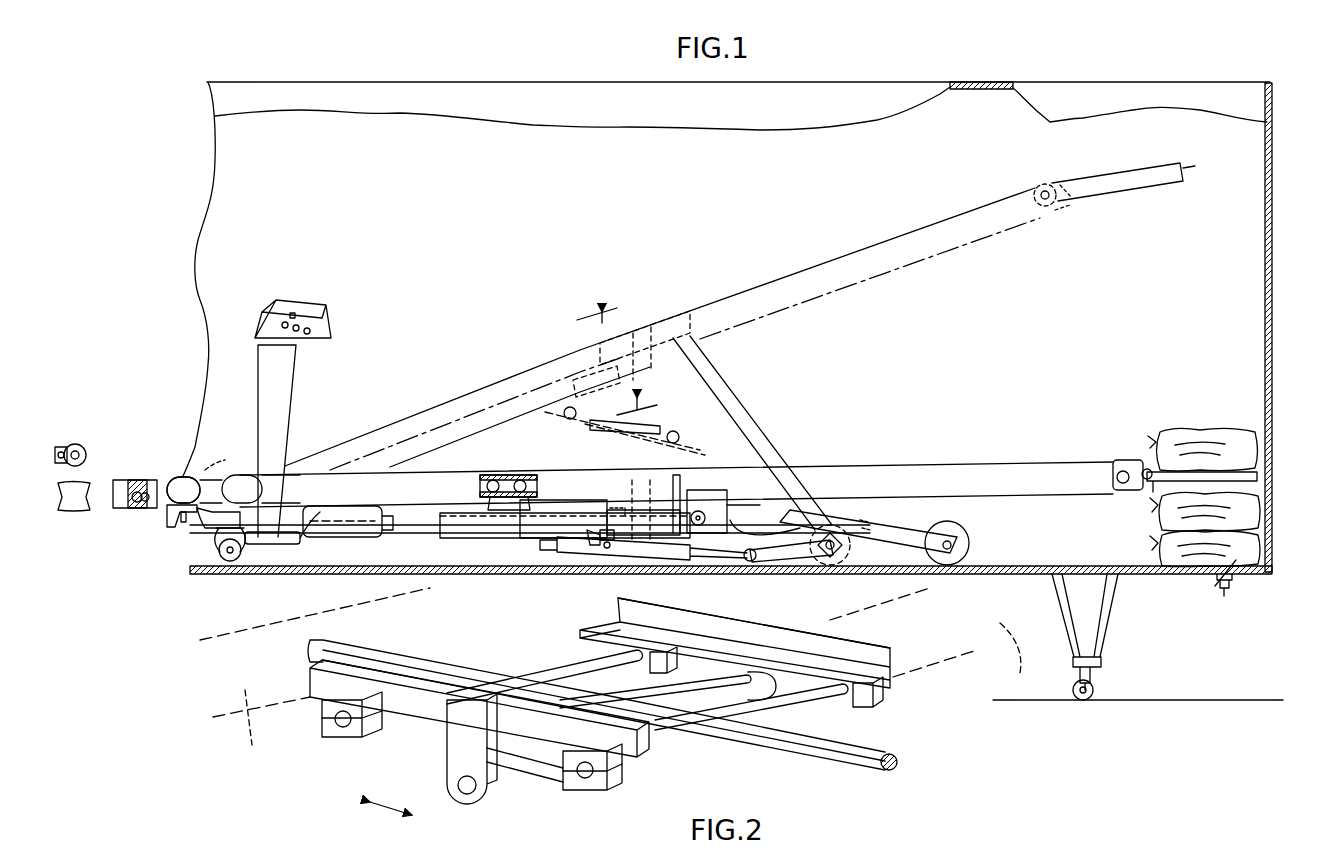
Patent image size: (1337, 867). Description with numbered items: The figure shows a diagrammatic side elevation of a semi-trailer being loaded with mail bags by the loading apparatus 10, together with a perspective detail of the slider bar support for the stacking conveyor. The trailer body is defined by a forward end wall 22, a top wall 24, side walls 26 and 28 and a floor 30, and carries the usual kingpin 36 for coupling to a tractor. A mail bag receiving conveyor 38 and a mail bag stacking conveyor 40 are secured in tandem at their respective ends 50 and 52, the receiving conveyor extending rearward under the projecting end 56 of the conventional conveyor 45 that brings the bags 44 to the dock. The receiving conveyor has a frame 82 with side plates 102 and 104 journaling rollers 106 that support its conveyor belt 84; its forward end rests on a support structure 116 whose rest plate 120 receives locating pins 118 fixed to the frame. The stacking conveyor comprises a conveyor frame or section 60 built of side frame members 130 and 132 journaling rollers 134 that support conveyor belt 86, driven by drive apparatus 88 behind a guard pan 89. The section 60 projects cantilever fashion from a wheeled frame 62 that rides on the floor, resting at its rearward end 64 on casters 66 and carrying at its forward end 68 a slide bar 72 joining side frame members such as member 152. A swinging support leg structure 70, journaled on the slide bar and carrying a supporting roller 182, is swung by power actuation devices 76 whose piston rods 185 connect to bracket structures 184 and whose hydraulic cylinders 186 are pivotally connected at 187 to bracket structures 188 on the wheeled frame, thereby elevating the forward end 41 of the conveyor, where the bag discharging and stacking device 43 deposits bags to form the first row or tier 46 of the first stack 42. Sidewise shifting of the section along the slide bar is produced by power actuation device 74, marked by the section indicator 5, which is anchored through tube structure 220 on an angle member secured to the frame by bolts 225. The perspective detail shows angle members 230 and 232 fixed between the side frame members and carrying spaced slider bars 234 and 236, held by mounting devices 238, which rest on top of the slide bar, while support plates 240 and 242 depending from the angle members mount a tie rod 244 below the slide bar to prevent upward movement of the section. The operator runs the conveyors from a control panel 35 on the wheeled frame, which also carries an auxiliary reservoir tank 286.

In FIG. 1, the section line 5 is at (608, 310).
In FIG. 1, the loading apparatus embodiment 10 is at (1238, 193).
In FIG. 1, the forward end wall 22 is at (1273, 290).
In FIG. 1, the top wall 24 is at (990, 84).
In FIG. 1, the side wall 26 is at (830, 95).
In FIG. 1, the side wall 28 is at (893, 130).
In FIG. 1, the floor 30 is at (975, 574).
In FIG. 1, the control panel 35 is at (336, 318).
In FIG. 1, the kingpin 36 is at (1226, 598).
In FIG. 1, the mail bag receiving conveyor 38 is at (150, 478).
In FIG. 1, the mail bag stacking conveyor 40 is at (975, 438).
In FIG. 1, the forward end of stacking conveyor 41 is at (1038, 210).
In FIG. 1, the first stack 42 is at (1238, 580).
In FIG. 1, the mail bag discharging and stacking device 43 is at (1150, 200).
In FIG. 1, the mail bag 44 is at (1258, 449).
In FIG. 1, the conventional conveyor 45 is at (72, 440).
In FIG. 1, the first row or tier 46 is at (1260, 528).
In FIG. 1, the forward end of receiving conveyor 50 is at (196, 478).
In FIG. 1, the rearward end of stacking conveyor 52 is at (262, 478).
In FIG. 1, the projecting end of conventional conveyor 56 is at (85, 448).
In FIG. 1, the conveyor frame or section 60 is at (420, 471).
In FIG. 1, the wheeled frame 62 is at (485, 540).
In FIG. 1, the rearward end of wheeled frame 64 is at (200, 530).
In FIG. 1, the casters 66 is at (230, 562).
In FIG. 1, the forward end of wheeled frame 68 is at (705, 470).
In FIG. 1, the swinging support leg structure 70 is at (1185, 175).
In FIG. 1, the slide bar 72 is at (705, 500).
In FIG. 2, the slide bar 72 is at (885, 773).
In FIG. 1, the power actuation device 74 is at (640, 493).
In FIG. 1, the power actuation devices 76 is at (600, 565).
In FIG. 1, the conveyor frame 82 is at (118, 480).
In FIG. 1, the conveyor belt 84 is at (140, 480).
In FIG. 1, the conveyor belt 86 is at (502, 475).
In FIG. 1, the drive apparatus 88 is at (262, 548).
In FIG. 1, the guard pan 89 is at (300, 540).
In FIG. 1, the side plate 102 is at (170, 475).
In FIG. 1, the side plate 104 is at (175, 520).
In FIG. 1, the rollers 106 is at (137, 503).
In FIG. 1, the support structure 116 is at (205, 485).
In FIG. 1, the locating pins 118 is at (148, 505).
In FIG. 1, the rest plate 120 is at (183, 477).
In FIG. 1, the side frame member 130 is at (572, 500).
In FIG. 1, the side frame member 132 is at (532, 475).
In FIG. 2, the side frame member 132 is at (270, 712).
In FIG. 1, the rollers 134 is at (530, 535).
In FIG. 1, the side frame member 152 is at (430, 534).
In FIG. 1, the supporting roller 182 is at (970, 547).
In FIG. 1, the bracket structure 184 is at (812, 560).
In FIG. 1, the piston rods 185 is at (733, 558).
In FIG. 1, the hydraulic cylinders 186 is at (675, 561).
In FIG. 1, the pivotal connection 187 is at (600, 545).
In FIG. 1, the bracket structures 188 is at (588, 538).
In FIG. 1, the tube structure 220 is at (665, 510).
In FIG. 1, the bolts 225 is at (620, 508).
In FIG. 2, the angle member 230 is at (428, 720).
In FIG. 2, the angle member 232 is at (893, 650).
In FIG. 2, the slider bar 234 is at (745, 722).
In FIG. 2, the slider bar 236 is at (470, 665).
In FIG. 2, the mounting devices 238 is at (335, 740).
In FIG. 2, the support plate 240 is at (496, 770).
In FIG. 2, the support plate 242 is at (855, 645).
In FIG. 1, the tie rod 244 is at (758, 506).
In FIG. 2, the tie rod 244 is at (551, 784).
In FIG. 1, the auxiliary reservoir tank 286 is at (342, 506).